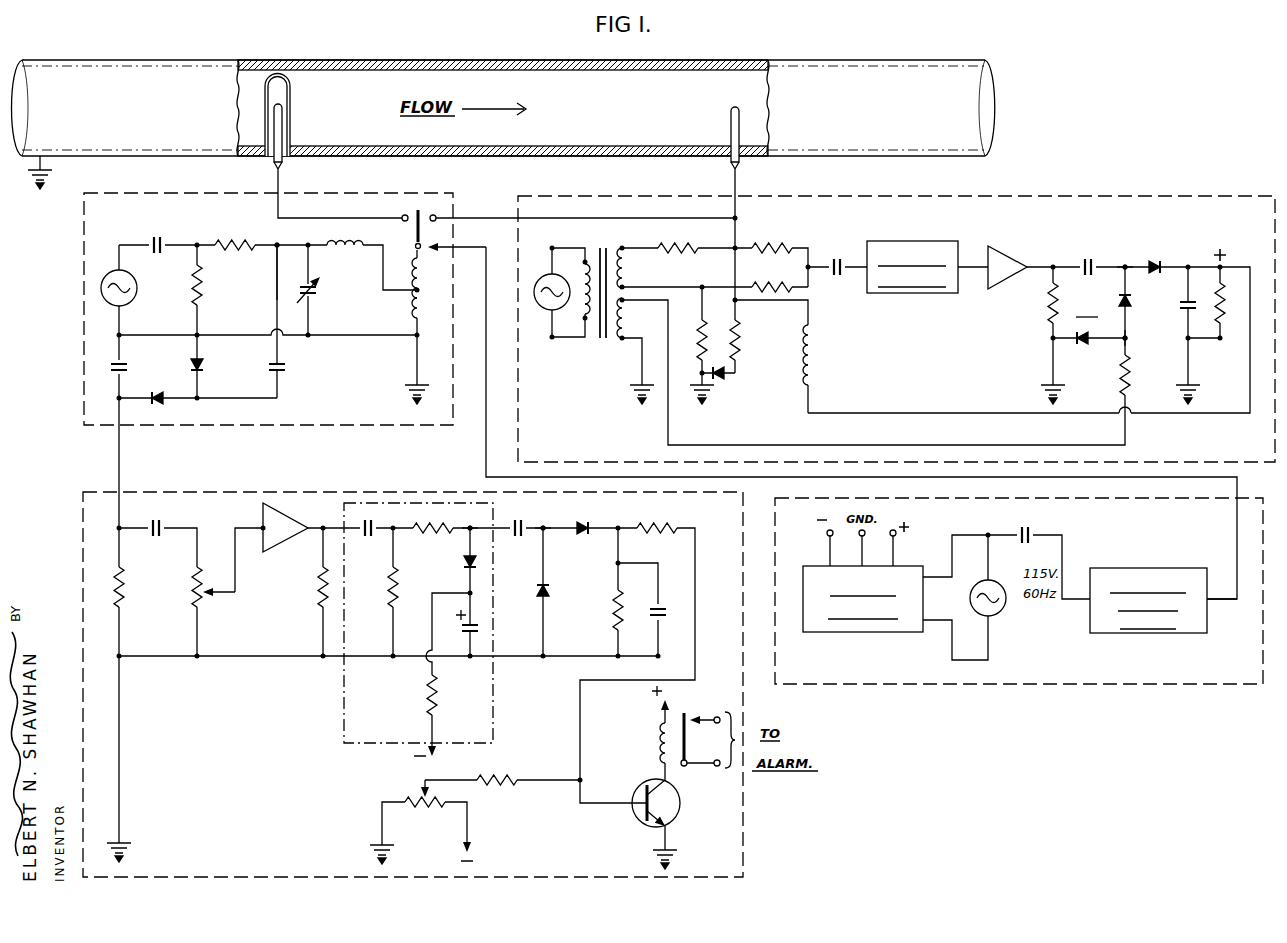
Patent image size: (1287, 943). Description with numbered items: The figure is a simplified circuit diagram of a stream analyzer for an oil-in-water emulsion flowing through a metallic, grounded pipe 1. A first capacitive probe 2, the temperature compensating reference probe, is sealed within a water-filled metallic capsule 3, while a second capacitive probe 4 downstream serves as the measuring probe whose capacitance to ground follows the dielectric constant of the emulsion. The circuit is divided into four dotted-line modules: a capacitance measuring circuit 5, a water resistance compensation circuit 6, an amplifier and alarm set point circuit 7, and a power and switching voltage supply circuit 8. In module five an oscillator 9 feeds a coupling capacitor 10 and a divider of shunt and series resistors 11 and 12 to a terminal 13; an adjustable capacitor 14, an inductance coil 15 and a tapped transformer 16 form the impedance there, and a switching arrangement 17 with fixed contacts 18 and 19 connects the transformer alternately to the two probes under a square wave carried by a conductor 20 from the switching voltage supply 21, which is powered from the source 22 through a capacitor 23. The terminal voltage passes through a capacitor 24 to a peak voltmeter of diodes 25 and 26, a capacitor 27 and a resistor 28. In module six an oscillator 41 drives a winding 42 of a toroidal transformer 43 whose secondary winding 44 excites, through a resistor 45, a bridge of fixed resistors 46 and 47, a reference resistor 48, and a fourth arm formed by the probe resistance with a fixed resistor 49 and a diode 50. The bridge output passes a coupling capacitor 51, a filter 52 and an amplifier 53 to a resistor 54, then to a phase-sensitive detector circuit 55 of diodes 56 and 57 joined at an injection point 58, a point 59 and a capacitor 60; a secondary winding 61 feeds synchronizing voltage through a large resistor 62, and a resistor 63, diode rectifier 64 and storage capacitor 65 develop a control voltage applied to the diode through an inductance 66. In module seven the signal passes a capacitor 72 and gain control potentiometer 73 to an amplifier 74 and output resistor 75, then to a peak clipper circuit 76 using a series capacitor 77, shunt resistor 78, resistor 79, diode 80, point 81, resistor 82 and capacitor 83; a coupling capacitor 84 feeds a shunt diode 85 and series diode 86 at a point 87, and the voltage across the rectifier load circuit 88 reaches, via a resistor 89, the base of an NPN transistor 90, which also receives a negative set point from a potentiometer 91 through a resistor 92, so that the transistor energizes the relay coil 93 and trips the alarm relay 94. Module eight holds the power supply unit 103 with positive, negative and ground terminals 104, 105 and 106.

The pipe 1 is at (846, 62).
The first metallic capacitive probe 2 is at (284, 126).
The capsule 3 is at (290, 98).
The second metallic capacitive probe 4 is at (728, 121).
The capacitance measuring circuit module 5 is at (84, 269).
The water resistance compensation circuit module 6 is at (1110, 197).
The amplifier and alarm set point circuit module 7 is at (83, 553).
The power and switching voltage supply circuit module 8 is at (1058, 688).
The oscillator 9 is at (134, 292).
The coupling capacitor 10 is at (159, 237).
The shunt resistor 11 is at (202, 291).
The series resistor 12 is at (236, 250).
The terminal 13 is at (276, 241).
The adjustable capacitor 14 is at (318, 302).
The inductance coil 15 is at (342, 252).
The tapped transformer 16 is at (410, 306).
The switching arrangement 17 is at (421, 206).
The fixed contact 18 is at (402, 217).
The fixed contact 19 is at (437, 216).
The conductor 20 is at (484, 466).
The switching voltage supply 21 is at (1144, 567).
The source 22 is at (1002, 614).
The capacitor 23 is at (1029, 528).
The capacitor 24 is at (281, 374).
The diode 25 is at (160, 404).
The diode 26 is at (204, 367).
The capacitor 27 is at (128, 367).
The resistor 28 is at (124, 600).
The oscillator 41 is at (548, 322).
The winding 42 is at (583, 303).
The toroidal transformer 43 is at (607, 344).
The secondary winding 44 is at (626, 266).
The resistor 45 is at (678, 242).
The fixed resistor 46 is at (774, 242).
The fixed resistor 47 is at (786, 281).
The reference resistor 48 is at (698, 334).
The fixed resistor 49 is at (740, 342).
The diode 50 is at (726, 378).
The coupling capacitor 51 is at (837, 258).
The filter 52 is at (925, 242).
The amplifier 53 is at (1004, 248).
The resistor 54 is at (1046, 302).
The phase-sensitive detector circuit 55 is at (1087, 307).
The diode 56 is at (1081, 345).
The diode 57 is at (1133, 308).
The injection point 58 is at (1131, 339).
The point 59 is at (1126, 265).
The capacitor 60 is at (1089, 259).
The secondary winding 61 is at (626, 322).
The large resistor 62 is at (1132, 372).
The resistor 63 is at (1224, 334).
The diode rectifier 64 is at (1163, 259).
The storage capacitor 65 is at (1185, 305).
The inductance 66 is at (812, 367).
The capacitor 72 is at (156, 538).
The gain control potentiometer 73 is at (202, 615).
The amplifier 74 is at (290, 541).
The output resistor 75 is at (318, 591).
The peak clipper circuit 76 is at (343, 710).
The series capacitor 77 is at (368, 538).
The shunt resistor 78 is at (390, 581).
The resistor 79 is at (435, 545).
The diode 80 is at (463, 563).
The point 81 is at (478, 522).
The resistor 82 is at (436, 691).
The capacitor 83 is at (463, 629).
The coupling capacitor 84 is at (518, 538).
The shunt diode 85 is at (548, 590).
The series diode 86 is at (580, 525).
The point 87 is at (544, 533).
The rectifier load circuit 88 is at (647, 584).
The resistor 89 is at (658, 526).
The NPN transistor 90 is at (638, 788).
The potentiometer 91 is at (423, 806).
The resistor 92 is at (499, 787).
The relay coil 93 is at (659, 742).
The alarm relay 94 is at (686, 741).
The power supply unit 103 is at (859, 633).
The terminal 104 is at (896, 534).
The terminal 105 is at (827, 533).
The ground terminal 106 is at (865, 531).